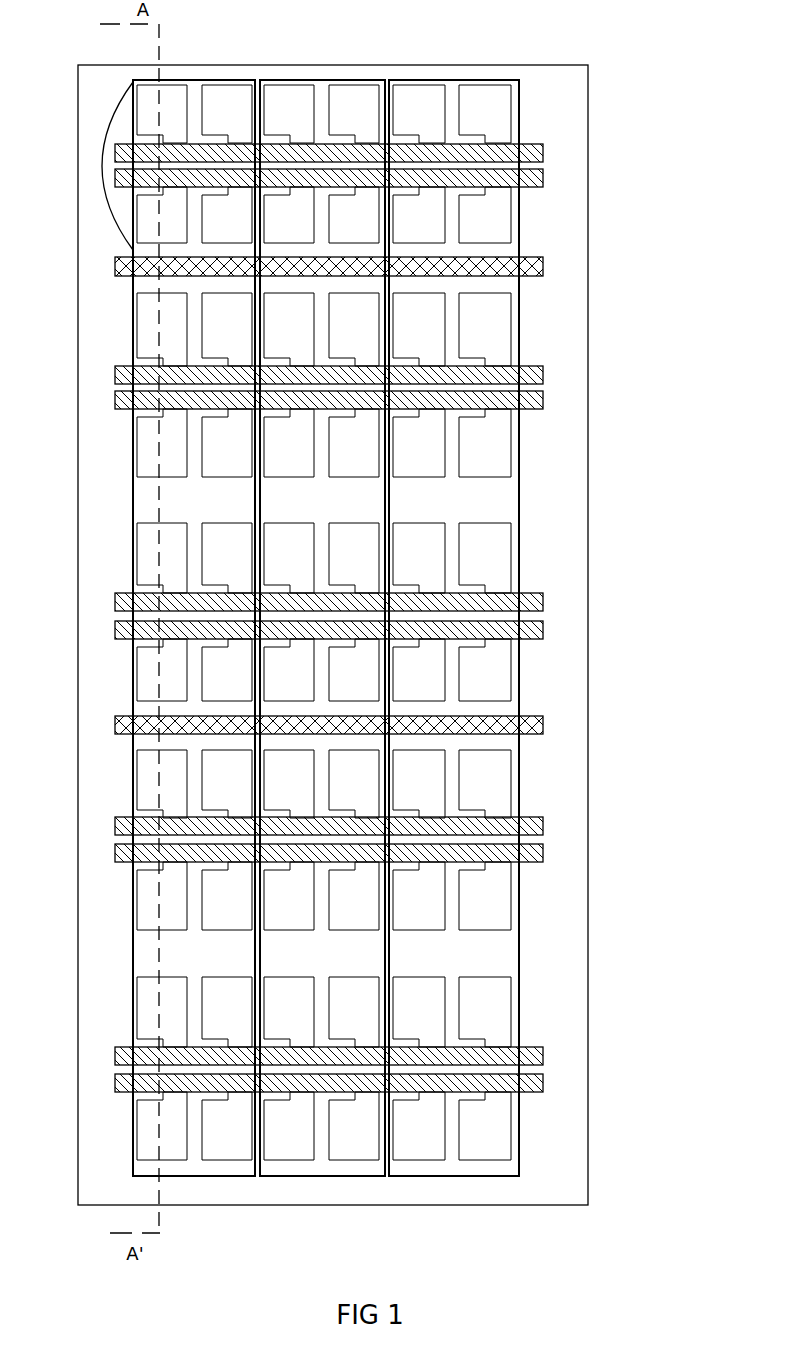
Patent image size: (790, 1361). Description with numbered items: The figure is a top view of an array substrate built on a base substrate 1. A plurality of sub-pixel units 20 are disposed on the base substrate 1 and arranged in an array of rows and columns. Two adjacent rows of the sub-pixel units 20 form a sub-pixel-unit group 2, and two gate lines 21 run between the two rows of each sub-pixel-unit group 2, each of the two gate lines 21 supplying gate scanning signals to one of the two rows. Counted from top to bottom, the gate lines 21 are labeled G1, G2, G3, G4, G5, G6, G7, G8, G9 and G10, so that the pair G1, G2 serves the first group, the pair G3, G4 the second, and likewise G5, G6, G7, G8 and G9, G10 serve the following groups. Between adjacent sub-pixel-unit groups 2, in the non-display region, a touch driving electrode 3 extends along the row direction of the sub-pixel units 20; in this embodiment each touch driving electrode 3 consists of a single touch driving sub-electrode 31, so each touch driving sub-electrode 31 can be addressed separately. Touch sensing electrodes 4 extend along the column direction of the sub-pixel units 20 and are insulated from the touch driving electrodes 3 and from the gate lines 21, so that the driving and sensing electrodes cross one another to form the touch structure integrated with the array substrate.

The base substrate 1 is at (588, 483).
The sub-pixel-unit group 2 is at (109, 166).
The touch driving electrode 3 is at (389, 450).
The touch driving sub-electrode 31 is at (546, 261).
The touch sensing electrode 4 is at (190, 83).
The sub-pixel unit 20 is at (473, 117).
The gate line 21 is at (349, 198).
The gate line G1 is at (344, 152).
The gate line G2 is at (344, 177).
The gate line G3 is at (344, 374).
The gate line G4 is at (344, 399).
The gate line G5 is at (344, 602).
The gate line G6 is at (344, 629).
The gate line G7 is at (344, 826).
The gate line G8 is at (344, 852).
The gate line G9 is at (344, 1055).
The gate line G10 is at (350, 1081).